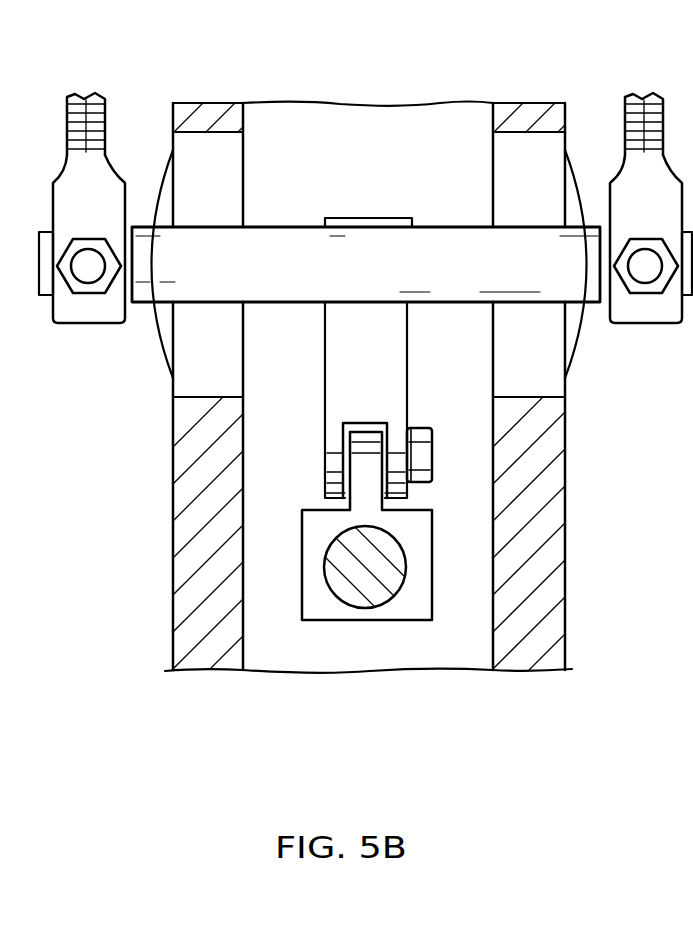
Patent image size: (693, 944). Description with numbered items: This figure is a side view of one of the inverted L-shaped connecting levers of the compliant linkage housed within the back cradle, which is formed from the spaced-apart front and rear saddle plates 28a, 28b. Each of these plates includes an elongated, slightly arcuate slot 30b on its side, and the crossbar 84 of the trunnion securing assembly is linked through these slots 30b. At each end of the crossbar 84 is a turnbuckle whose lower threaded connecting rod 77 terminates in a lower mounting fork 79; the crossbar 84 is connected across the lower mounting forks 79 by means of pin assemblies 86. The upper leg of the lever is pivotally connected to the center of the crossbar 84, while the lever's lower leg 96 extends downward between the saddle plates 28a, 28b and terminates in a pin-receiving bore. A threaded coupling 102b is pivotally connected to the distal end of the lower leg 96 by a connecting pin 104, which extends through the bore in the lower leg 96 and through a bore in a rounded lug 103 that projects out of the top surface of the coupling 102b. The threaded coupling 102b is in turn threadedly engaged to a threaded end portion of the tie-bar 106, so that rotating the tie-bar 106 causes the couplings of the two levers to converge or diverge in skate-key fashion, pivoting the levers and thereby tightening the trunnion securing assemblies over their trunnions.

The front saddle plate 28a is at (556, 476).
The rear saddle plate 28b is at (172, 478).
The elongated slot 30b is at (227, 383).
The lower threaded connecting rod 77 is at (82, 100).
The lower mounting fork 79 is at (97, 222).
The crossbar 84 is at (356, 270).
The pin assembly 86 is at (83, 272).
The lower leg 96 is at (346, 383).
The threaded coupling 102b is at (415, 605).
The rounded lug 103 is at (360, 472).
The connecting pin 104 is at (309, 446).
The tie-bar 106 is at (343, 588).